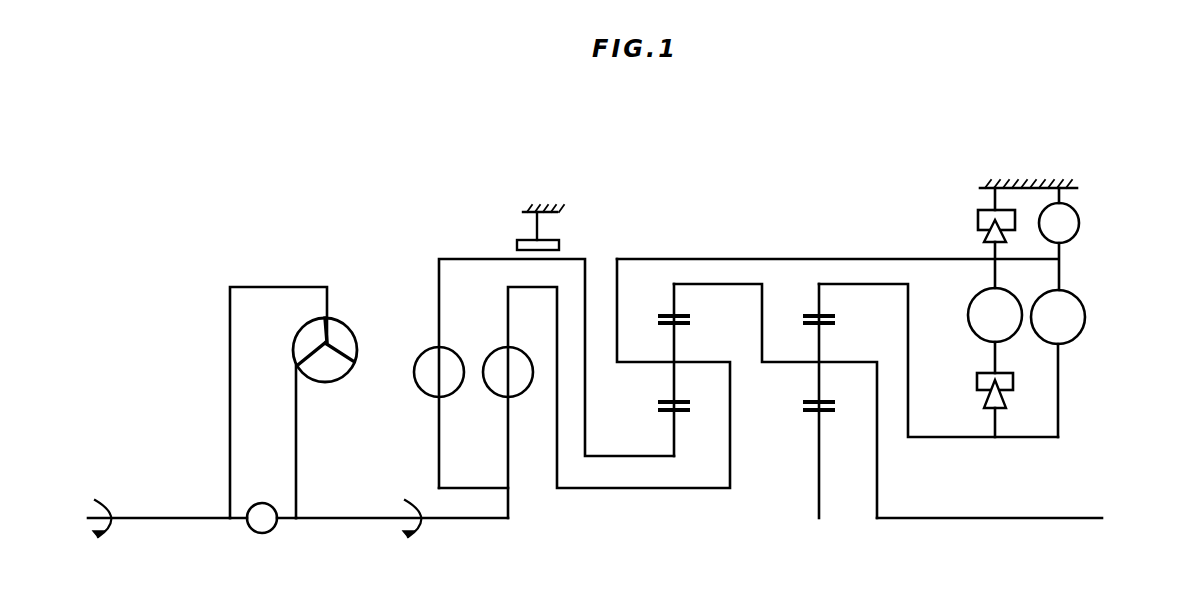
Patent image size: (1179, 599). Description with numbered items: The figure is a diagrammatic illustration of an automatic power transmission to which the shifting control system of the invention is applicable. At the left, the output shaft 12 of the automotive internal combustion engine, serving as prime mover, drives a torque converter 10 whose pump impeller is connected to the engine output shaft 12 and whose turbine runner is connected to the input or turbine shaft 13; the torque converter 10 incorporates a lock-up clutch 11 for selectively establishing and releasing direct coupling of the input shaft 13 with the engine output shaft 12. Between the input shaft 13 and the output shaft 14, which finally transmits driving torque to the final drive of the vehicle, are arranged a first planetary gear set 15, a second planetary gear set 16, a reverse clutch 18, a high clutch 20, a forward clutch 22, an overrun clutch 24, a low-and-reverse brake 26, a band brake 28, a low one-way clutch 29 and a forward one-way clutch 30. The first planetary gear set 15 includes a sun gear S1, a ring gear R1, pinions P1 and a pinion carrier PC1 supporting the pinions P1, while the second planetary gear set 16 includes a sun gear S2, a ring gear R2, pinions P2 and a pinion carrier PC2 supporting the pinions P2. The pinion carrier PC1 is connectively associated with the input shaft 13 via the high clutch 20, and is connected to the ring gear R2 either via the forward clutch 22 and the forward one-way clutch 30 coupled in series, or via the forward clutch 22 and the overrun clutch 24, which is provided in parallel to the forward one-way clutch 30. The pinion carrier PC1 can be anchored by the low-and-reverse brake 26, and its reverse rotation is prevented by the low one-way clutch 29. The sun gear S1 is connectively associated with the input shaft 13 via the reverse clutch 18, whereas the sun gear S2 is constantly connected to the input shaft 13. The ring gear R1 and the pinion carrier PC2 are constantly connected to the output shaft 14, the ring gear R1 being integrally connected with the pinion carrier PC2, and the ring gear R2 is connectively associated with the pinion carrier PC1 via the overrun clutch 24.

The torque converter 10 is at (352, 312).
The lock-up clutch 11 is at (262, 533).
The output shaft of engine 12 is at (187, 517).
The input shaft 13 is at (357, 521).
The output shaft 14 is at (933, 517).
The first planetary gear set 15 is at (737, 352).
The second planetary gear set 16 is at (901, 372).
The reverse clutch 18 is at (416, 381).
The high clutch 20 is at (497, 396).
The forward clutch 22 is at (972, 329).
The overrun clutch 24 is at (1085, 318).
The low-and-reverse brake 26 is at (1079, 224).
The band brake 28 is at (540, 228).
The low one-way clutch 29 is at (978, 220).
The forward one-way clutch 30 is at (975, 384).
The ring gear R1 is at (677, 289).
The pinion carrier PC1 is at (705, 357).
The pinions P1 is at (671, 392).
The sun gear S1 is at (675, 450).
The ring gear R2 is at (822, 289).
The pinion carrier PC2 is at (848, 358).
The pinions P2 is at (815, 393).
The sun gear S2 is at (819, 492).